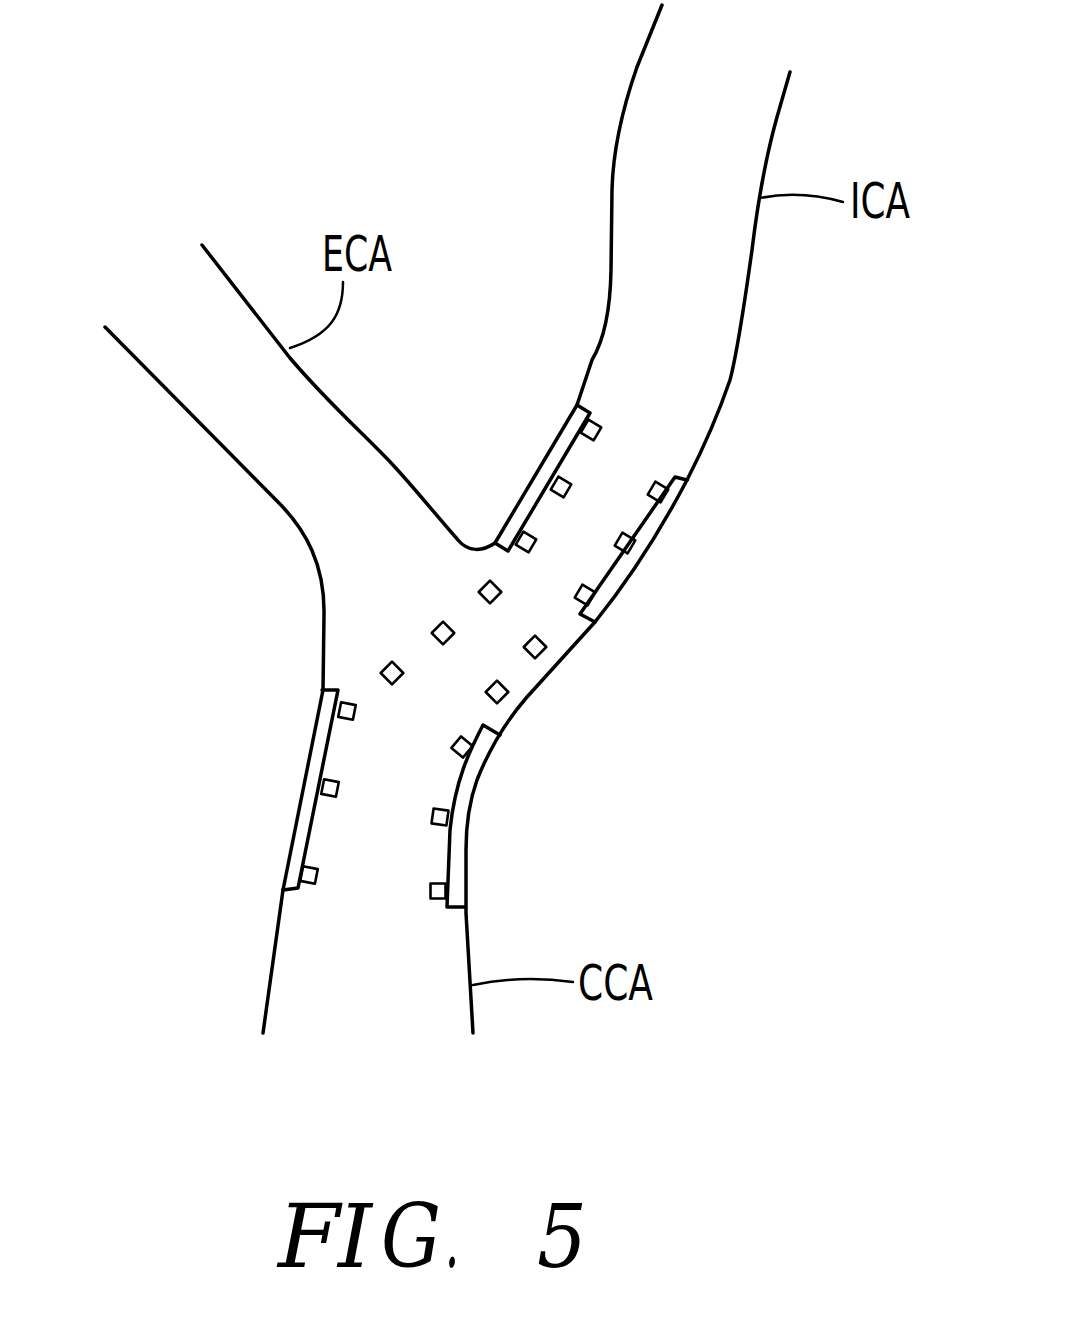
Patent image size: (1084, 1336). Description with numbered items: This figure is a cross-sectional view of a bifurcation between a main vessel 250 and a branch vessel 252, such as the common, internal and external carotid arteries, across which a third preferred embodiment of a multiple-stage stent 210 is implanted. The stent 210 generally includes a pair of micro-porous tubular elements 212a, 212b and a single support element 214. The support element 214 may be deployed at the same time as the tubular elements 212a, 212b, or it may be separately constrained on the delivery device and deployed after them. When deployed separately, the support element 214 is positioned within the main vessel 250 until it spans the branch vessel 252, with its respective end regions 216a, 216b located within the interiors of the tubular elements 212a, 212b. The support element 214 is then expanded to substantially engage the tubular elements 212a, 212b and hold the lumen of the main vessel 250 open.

The multiple-stage stent 210 is at (658, 641).
The micro-porous tubular element 212a is at (734, 509).
The micro-porous tubular element 212b is at (468, 837).
The support element 214 is at (508, 695).
The end region of the support element 216a is at (655, 484).
The end region of the support element 216b is at (318, 876).
The main vessel 250 is at (241, 856).
The branch vessel 252 is at (240, 463).